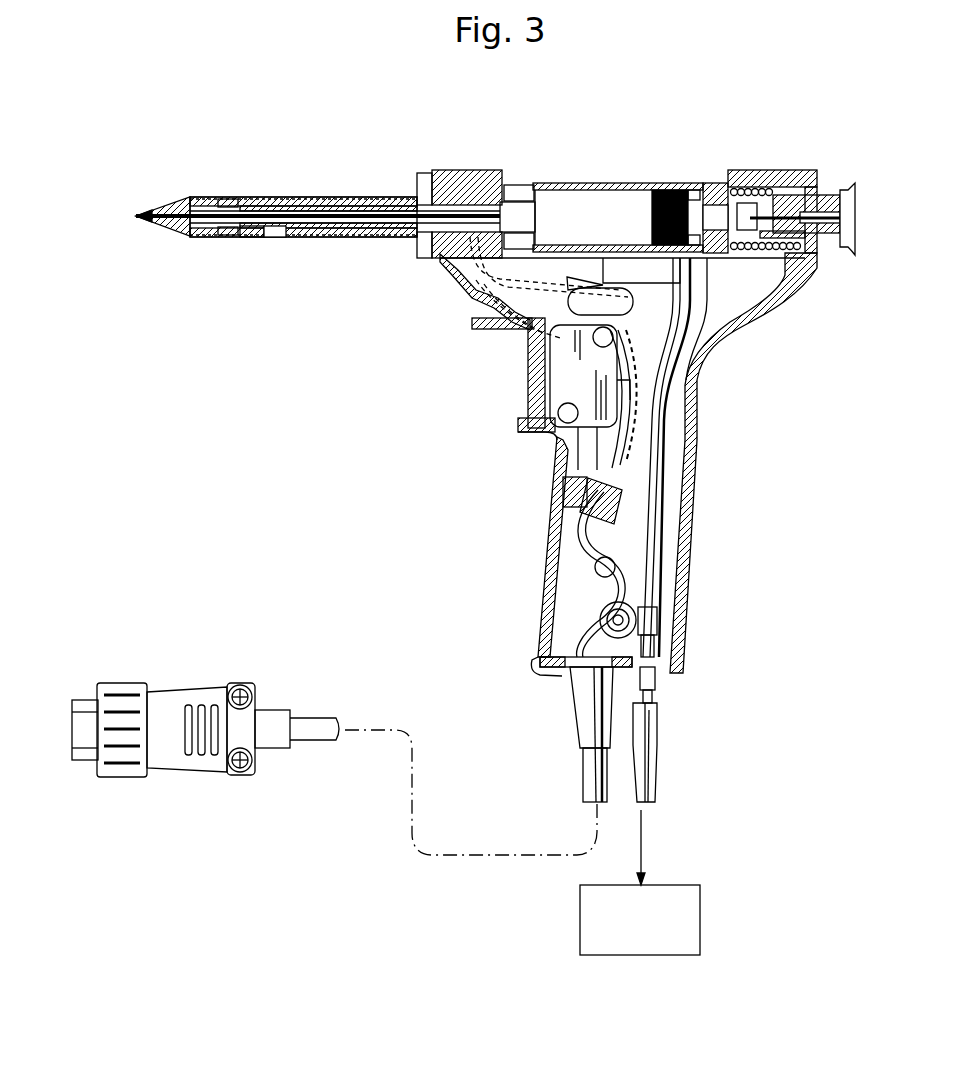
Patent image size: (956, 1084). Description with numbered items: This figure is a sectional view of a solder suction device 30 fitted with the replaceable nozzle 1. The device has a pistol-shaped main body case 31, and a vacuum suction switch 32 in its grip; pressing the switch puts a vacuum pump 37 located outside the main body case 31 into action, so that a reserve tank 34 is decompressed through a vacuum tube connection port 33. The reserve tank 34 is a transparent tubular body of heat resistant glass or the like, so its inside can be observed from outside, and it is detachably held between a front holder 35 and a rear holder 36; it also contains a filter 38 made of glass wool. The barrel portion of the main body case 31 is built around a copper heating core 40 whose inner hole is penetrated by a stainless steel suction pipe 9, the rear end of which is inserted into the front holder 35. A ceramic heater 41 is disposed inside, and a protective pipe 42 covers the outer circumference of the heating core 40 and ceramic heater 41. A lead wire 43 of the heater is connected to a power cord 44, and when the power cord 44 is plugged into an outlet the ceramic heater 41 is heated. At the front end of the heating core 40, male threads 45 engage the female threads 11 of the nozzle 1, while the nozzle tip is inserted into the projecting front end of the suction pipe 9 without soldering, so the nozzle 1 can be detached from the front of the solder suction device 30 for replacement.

The nozzle 1 is at (178, 204).
The suction pipe 9 is at (268, 238).
The female threads 11 is at (226, 198).
The solder suction device 30 is at (729, 386).
The main body case 31 is at (699, 495).
The vacuum suction switch 32 is at (524, 357).
The vacuum tube connection port 33 is at (658, 697).
The reserve tank 34 is at (606, 183).
The front holder 35 is at (496, 171).
The rear holder 36 is at (712, 183).
The vacuum pump 37 is at (701, 917).
The filter 38 is at (661, 190).
The heating core 40 is at (264, 198).
The ceramic heater 41 is at (306, 197).
The protective pipe 42 is at (353, 197).
The lead wire 43 is at (472, 283).
The power cord 44 is at (584, 777).
The male threads 45 is at (233, 238).